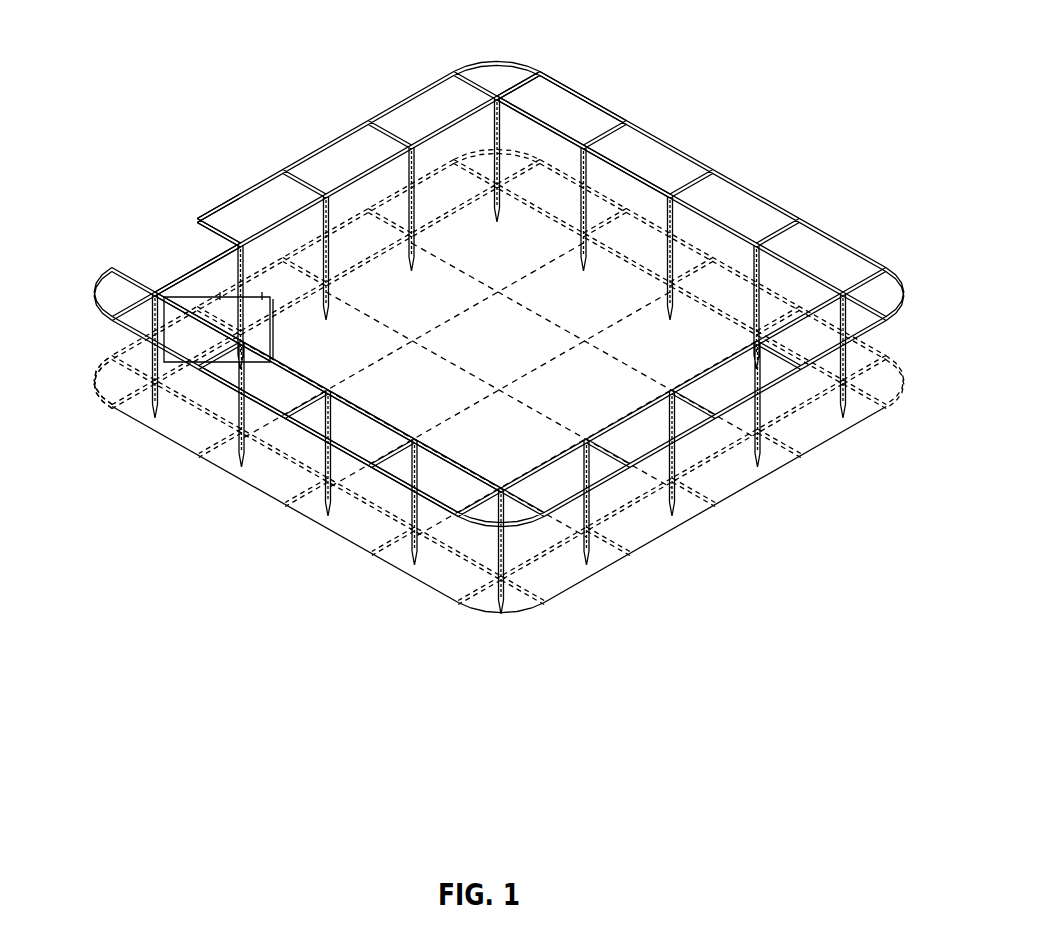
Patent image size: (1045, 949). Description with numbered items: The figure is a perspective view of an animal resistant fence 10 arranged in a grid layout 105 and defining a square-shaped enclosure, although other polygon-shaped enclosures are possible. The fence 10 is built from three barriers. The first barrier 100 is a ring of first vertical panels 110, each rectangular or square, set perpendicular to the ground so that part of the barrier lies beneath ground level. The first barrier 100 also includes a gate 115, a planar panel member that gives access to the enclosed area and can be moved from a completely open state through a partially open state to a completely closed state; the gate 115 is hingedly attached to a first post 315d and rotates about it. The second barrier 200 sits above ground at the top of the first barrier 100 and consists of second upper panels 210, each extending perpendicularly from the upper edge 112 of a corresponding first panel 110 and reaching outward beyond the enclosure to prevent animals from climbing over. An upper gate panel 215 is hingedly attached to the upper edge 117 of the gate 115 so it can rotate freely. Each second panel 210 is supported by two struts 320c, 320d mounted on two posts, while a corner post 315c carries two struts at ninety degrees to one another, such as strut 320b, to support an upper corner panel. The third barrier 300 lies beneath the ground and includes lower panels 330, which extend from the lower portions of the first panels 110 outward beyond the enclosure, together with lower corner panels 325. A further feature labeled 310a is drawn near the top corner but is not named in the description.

The animal resistant fence 10 is at (470, 342).
The first barrier 100 is at (152, 363).
The grid layout 105 is at (512, 348).
The first vertical panel 110 is at (623, 222).
The upper edge 112 is at (640, 178).
The gate 115 is at (279, 354).
The upper edge 117 is at (165, 297).
The second barrier 200 is at (93, 303).
The second upper panel 210 is at (315, 413).
The upper gate panel 215 is at (172, 296).
The third barrier 300 is at (116, 409).
The rail junction 310a is at (483, 102).
The corner post 315c is at (490, 137).
The first post 315d is at (159, 366).
The strut 320b is at (520, 100).
The strut 320c is at (322, 424).
The strut 320d is at (360, 433).
The lower corner panel 325 is at (486, 600).
The lower panel 330 is at (435, 577).